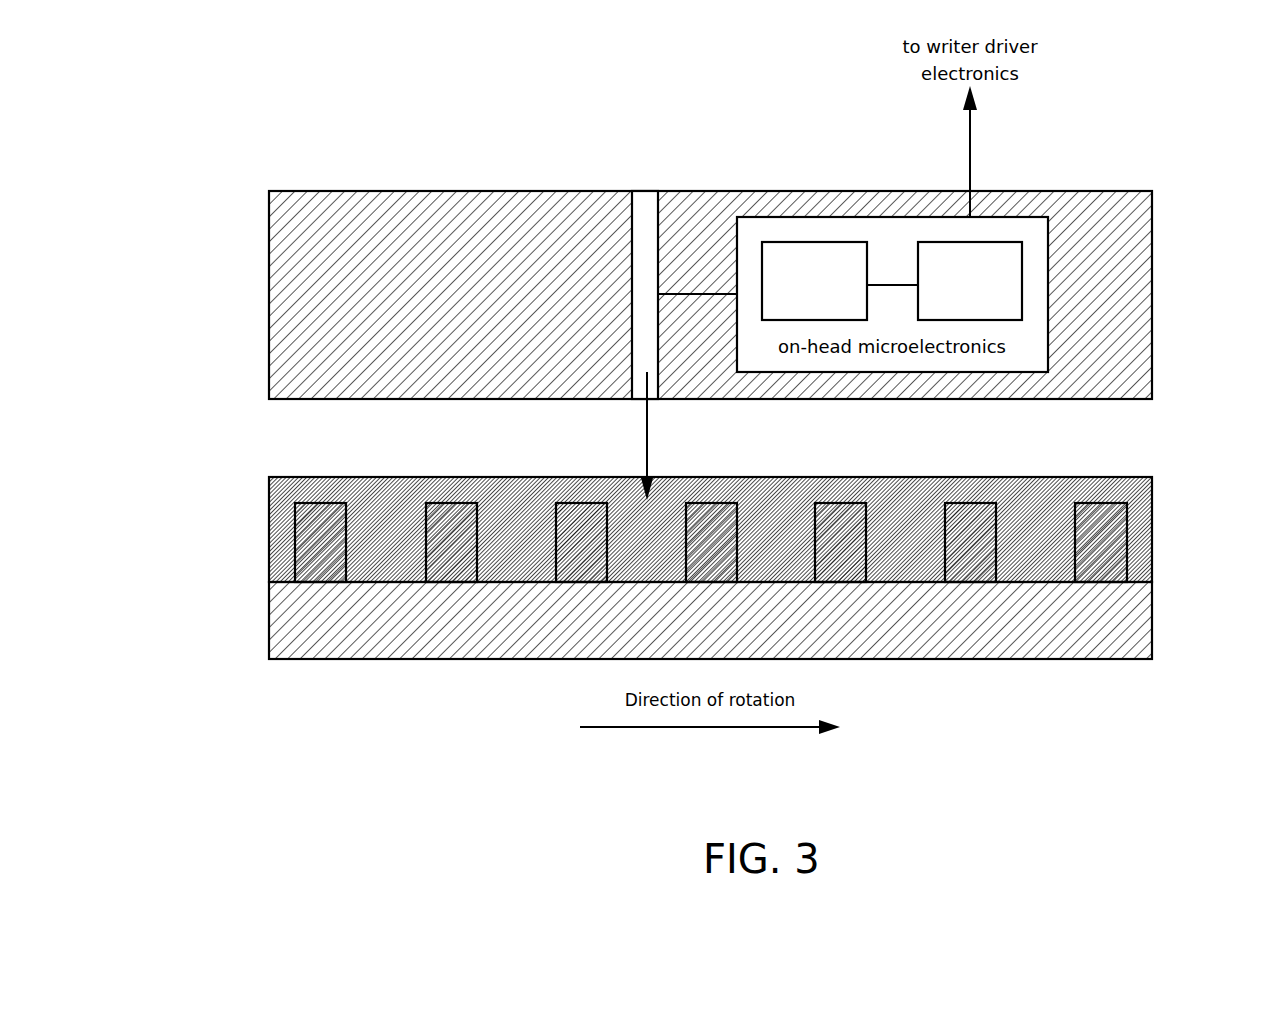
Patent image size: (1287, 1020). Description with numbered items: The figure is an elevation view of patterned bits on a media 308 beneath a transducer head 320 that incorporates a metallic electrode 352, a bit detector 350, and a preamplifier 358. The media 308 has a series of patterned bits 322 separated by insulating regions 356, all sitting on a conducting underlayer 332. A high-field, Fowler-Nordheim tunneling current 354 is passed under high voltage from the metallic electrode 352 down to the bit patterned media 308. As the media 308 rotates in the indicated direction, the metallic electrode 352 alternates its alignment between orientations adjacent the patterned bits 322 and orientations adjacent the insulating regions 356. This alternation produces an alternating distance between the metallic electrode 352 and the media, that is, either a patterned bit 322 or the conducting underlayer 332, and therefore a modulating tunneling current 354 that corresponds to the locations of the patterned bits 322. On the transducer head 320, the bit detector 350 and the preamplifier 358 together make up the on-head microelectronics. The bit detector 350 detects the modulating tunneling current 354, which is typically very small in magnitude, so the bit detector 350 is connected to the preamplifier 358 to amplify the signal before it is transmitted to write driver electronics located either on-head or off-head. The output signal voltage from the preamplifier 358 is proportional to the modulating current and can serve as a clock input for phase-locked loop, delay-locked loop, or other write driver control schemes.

The media 308 is at (705, 594).
The transducer head 320 is at (710, 295).
The patterned bit 322 is at (1127, 528).
The conducting underlayer 332 is at (710, 620).
The bit detector 350 is at (814, 281).
The metallic electrode 352 is at (645, 191).
The tunneling current 354 is at (647, 437).
The insulating region 356 is at (710, 529).
The preamplifier 358 is at (970, 281).